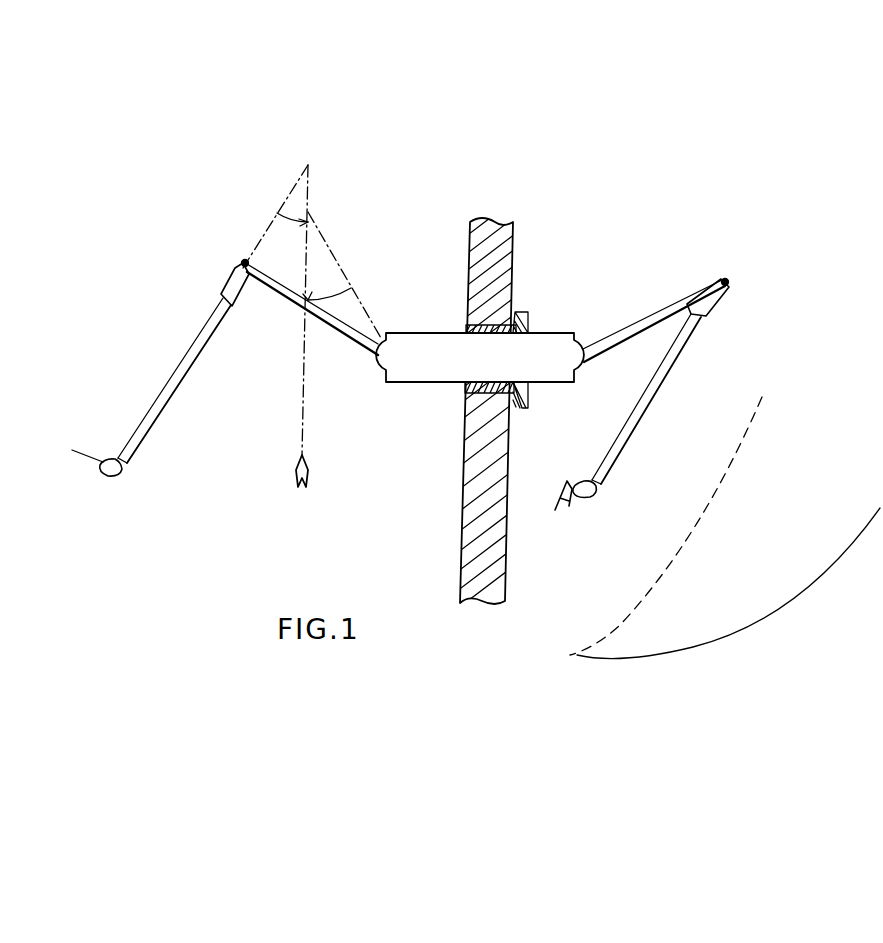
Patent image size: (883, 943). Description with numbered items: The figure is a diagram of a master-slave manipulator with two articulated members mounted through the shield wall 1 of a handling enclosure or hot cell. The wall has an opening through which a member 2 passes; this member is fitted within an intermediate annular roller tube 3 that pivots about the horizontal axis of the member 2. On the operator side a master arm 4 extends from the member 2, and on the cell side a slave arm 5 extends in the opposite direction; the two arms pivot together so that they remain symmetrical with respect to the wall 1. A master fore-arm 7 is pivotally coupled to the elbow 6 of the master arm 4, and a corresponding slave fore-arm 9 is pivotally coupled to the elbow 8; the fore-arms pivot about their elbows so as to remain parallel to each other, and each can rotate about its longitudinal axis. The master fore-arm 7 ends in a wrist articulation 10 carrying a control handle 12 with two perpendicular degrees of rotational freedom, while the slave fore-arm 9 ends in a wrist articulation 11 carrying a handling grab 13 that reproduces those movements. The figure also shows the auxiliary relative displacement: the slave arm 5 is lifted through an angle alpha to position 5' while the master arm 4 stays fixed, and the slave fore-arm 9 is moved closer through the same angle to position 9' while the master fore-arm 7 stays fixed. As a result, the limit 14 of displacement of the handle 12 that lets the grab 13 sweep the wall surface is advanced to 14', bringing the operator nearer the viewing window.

The shield wall 1 is at (505, 261).
The member 2 is at (557, 343).
The roller tube 3 is at (514, 325).
The master arm 4 is at (633, 325).
The slave arm 5 is at (312, 319).
The lifted position of slave arm 5' is at (352, 275).
The elbow of master arm 6 is at (729, 284).
The master fore-arm 7 is at (643, 411).
The elbow of slave arm 8 is at (245, 261).
The slave fore-arm 9 is at (183, 363).
The moved position of slave fore-arm 9' is at (291, 326).
The wrist articulation 10 is at (596, 489).
The wrist articulation 11 is at (121, 469).
The control handle 12 is at (570, 505).
The handling grab 13 is at (92, 466).
The limit of displacement of handle 14 is at (728, 583).
The advanced limit of displacement 14' is at (666, 526).